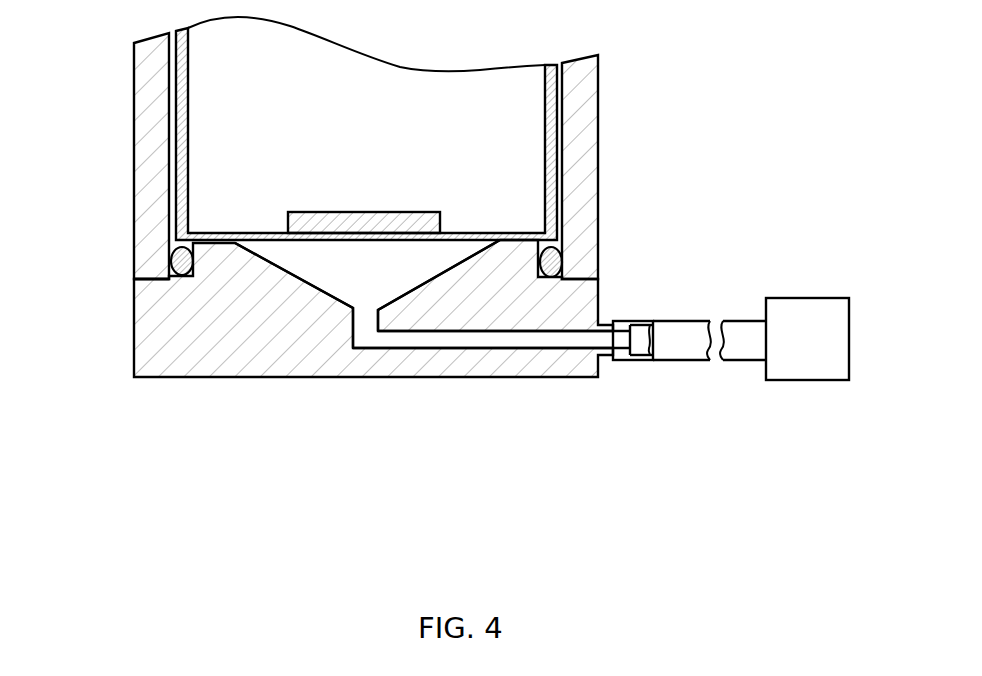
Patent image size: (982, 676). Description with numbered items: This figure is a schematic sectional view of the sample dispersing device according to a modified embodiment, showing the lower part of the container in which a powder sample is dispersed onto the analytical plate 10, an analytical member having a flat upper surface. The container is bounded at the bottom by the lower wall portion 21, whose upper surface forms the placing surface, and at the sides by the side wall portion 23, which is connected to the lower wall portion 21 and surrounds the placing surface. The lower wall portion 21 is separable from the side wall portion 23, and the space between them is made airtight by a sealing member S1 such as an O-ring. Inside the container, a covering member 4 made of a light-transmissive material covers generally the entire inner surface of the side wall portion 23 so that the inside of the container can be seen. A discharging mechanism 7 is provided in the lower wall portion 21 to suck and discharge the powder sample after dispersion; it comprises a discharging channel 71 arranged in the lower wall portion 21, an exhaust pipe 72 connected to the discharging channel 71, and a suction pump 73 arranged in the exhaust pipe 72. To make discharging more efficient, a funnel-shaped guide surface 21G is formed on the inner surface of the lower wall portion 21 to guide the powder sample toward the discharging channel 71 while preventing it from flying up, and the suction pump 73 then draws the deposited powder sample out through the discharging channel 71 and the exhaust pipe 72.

The side wall portion 23 is at (133, 93).
The covering member 4 is at (182, 157).
The sealing member S1 is at (133, 287).
The lower wall portion 21 is at (263, 377).
The funnel-shaped guide surface 21G is at (293, 275).
The analytical plate 10 is at (337, 212).
The discharging channel 71 is at (450, 348).
The discharging mechanism 7 is at (682, 226).
The exhaust pipe 72 is at (680, 317).
The suction pump 73 is at (808, 298).